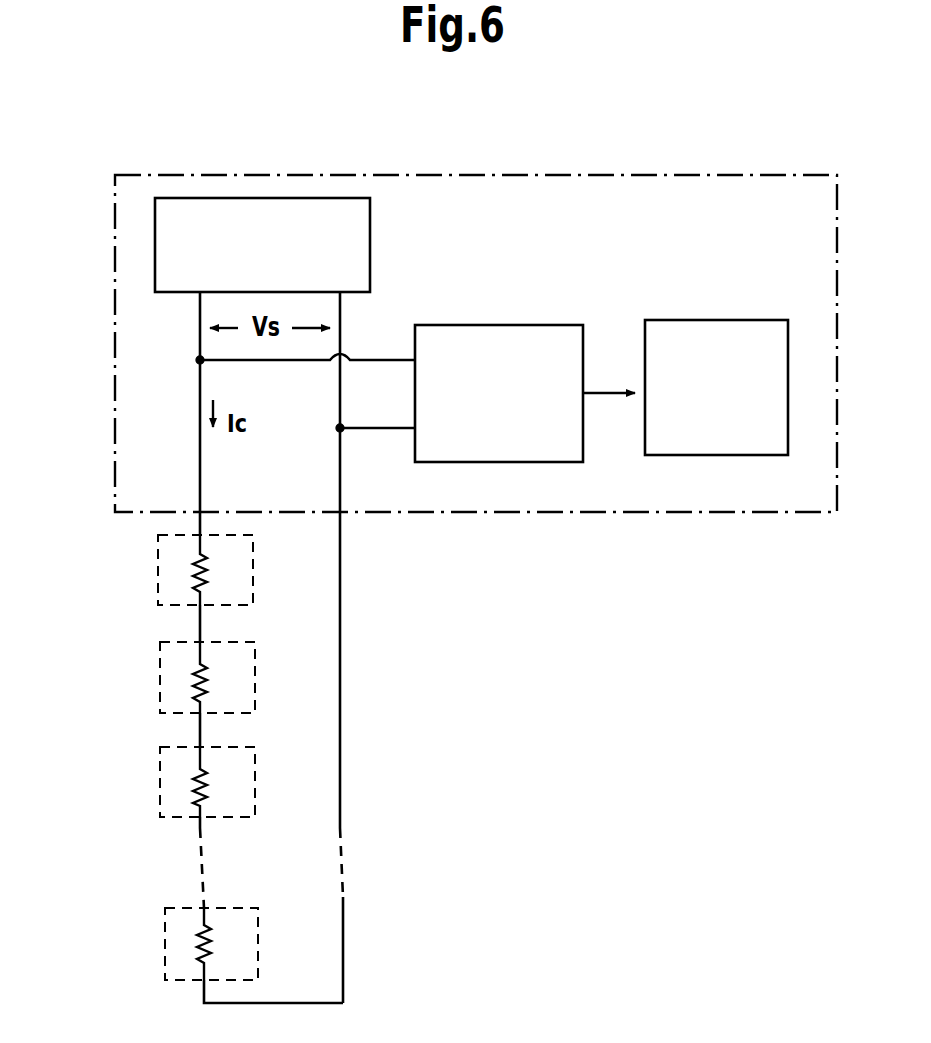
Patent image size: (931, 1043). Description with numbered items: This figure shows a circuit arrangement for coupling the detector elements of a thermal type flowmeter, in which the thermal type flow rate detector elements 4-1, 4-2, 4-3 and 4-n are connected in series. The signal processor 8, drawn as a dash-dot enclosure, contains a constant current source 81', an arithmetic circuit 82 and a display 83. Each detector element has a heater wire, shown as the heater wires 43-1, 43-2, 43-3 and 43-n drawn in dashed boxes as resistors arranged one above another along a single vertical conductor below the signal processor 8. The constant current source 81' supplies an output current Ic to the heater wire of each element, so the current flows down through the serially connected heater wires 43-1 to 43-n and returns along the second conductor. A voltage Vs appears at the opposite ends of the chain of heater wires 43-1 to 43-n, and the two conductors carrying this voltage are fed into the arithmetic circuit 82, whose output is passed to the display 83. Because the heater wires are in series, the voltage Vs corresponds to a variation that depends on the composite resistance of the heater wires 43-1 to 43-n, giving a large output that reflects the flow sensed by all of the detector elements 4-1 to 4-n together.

The signal processor 8 is at (692, 175).
The constant current source 81' is at (320, 244).
The arithmetic circuit 82 is at (530, 325).
The display 83 is at (725, 320).
The heater wire 43-1 is at (193, 574).
The heater wire 43-2 is at (195, 679).
The heater wire 43-3 is at (195, 783).
The heater wire 43-n is at (200, 946).
The thermal type flow rate detector element 4-1 is at (253, 600).
The thermal type flow rate detector element 4-2 is at (255, 690).
The thermal type flow rate detector element 4-3 is at (255, 797).
The thermal type flow rate detector element 4-n is at (258, 957).